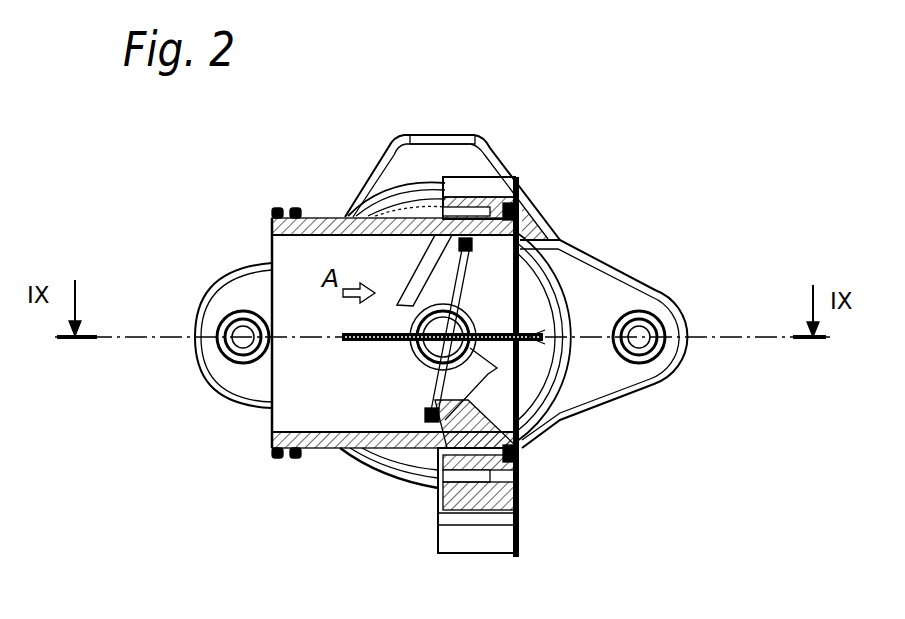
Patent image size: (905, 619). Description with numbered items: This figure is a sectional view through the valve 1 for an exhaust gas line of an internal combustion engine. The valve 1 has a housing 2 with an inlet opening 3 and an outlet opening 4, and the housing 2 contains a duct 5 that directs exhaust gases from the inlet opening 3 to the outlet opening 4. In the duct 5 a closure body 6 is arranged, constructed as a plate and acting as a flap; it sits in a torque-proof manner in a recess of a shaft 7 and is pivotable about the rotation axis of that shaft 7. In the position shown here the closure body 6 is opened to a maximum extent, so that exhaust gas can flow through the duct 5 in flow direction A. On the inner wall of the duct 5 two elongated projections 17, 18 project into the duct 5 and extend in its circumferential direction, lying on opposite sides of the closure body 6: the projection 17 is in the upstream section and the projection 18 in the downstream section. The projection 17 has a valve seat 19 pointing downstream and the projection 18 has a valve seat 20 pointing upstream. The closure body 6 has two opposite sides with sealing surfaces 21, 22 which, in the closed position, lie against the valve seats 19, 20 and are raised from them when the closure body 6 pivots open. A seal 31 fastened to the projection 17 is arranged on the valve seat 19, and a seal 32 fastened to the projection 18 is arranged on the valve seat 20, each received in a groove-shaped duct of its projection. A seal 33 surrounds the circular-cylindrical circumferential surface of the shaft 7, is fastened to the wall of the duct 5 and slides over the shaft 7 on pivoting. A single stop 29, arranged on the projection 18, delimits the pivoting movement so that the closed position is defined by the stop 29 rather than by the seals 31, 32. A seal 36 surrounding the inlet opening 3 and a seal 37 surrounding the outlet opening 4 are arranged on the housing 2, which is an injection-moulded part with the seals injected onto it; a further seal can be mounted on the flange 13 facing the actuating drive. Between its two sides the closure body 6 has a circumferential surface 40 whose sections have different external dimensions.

The valve 1 is at (487, 106).
The housing 2 is at (330, 212).
The inlet opening 3 is at (266, 243).
The outlet opening 4 is at (536, 359).
The duct 5 is at (306, 451).
The closure body 6 is at (390, 347).
The shaft 7 is at (322, 300).
The flange 13 is at (672, 349).
The projection 17 is at (443, 240).
The projection 18 is at (540, 440).
The valve seat 19 is at (493, 267).
The valve seat 20 is at (400, 410).
The sealing surface 21 is at (525, 306).
The sealing surface 22 is at (357, 343).
The stop 29 is at (522, 354).
The seal 31 is at (532, 240).
The seal 32 is at (373, 405).
The seal 33 is at (522, 304).
The seal 36 is at (282, 203).
The seal 37 is at (517, 456).
The circumferential surface 40 is at (342, 335).